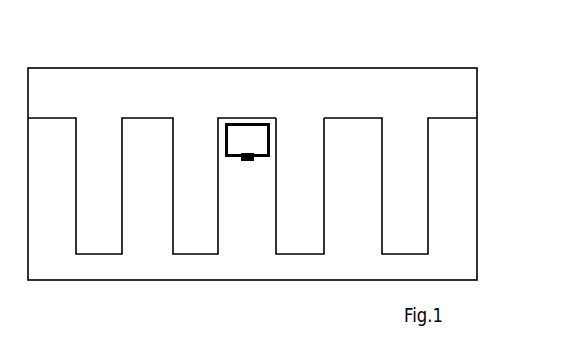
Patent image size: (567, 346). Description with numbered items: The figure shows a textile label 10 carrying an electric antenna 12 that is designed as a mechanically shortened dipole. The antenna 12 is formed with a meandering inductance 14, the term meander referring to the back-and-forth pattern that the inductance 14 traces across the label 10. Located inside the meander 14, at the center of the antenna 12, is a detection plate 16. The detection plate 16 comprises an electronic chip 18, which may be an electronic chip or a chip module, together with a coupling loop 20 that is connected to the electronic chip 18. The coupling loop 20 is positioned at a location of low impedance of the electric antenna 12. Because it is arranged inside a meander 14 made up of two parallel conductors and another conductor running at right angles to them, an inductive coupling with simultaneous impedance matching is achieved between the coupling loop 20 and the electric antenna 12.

The textile label 10 is at (470, 186).
The electric antenna 12 is at (432, 233).
The meandering inductance 14 is at (315, 190).
The detection plate 16 is at (243, 178).
The electronic chip 18 is at (257, 208).
The coupling loop 20 is at (247, 120).